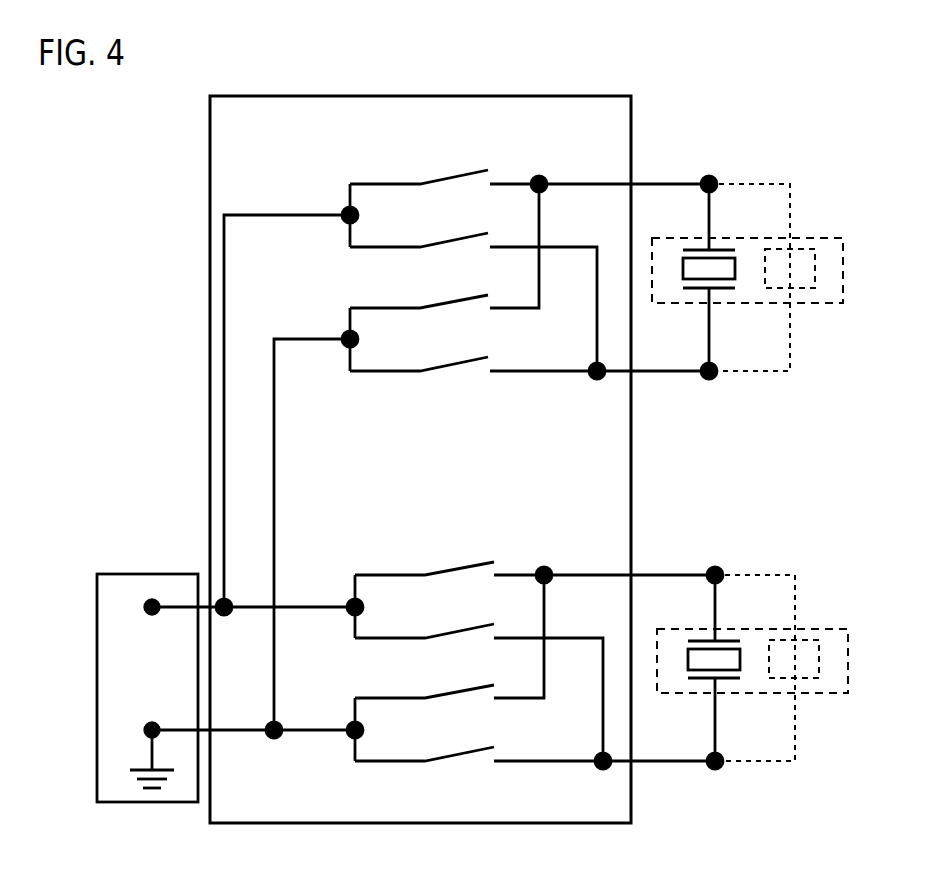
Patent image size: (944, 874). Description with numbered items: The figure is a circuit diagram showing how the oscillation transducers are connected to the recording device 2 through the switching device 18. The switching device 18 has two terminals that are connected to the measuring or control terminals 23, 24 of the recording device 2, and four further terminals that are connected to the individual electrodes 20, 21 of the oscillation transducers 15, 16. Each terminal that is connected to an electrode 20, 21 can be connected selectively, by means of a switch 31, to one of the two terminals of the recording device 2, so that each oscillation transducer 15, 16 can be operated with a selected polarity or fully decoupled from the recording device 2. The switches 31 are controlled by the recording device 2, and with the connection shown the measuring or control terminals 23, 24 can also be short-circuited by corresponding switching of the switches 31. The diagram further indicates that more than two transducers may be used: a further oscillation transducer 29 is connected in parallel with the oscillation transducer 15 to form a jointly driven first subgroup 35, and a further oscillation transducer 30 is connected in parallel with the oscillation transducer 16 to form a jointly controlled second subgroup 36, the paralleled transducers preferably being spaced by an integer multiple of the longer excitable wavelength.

The recording device 2 is at (150, 574).
The oscillation transducer 15 is at (740, 658).
The oscillation transducer 16 is at (683, 268).
The switching device 18 is at (210, 152).
The electrode 20 is at (700, 640).
The electrode 21 is at (697, 681).
The measuring or control terminal 23 is at (176, 611).
The measuring or control terminal 24 is at (181, 727).
The further oscillation transducer 29 is at (818, 660).
The further oscillation transducer 30 is at (814, 268).
The switch 31 is at (425, 155).
The first subgroup 35 is at (848, 647).
The second subgroup 36 is at (843, 256).